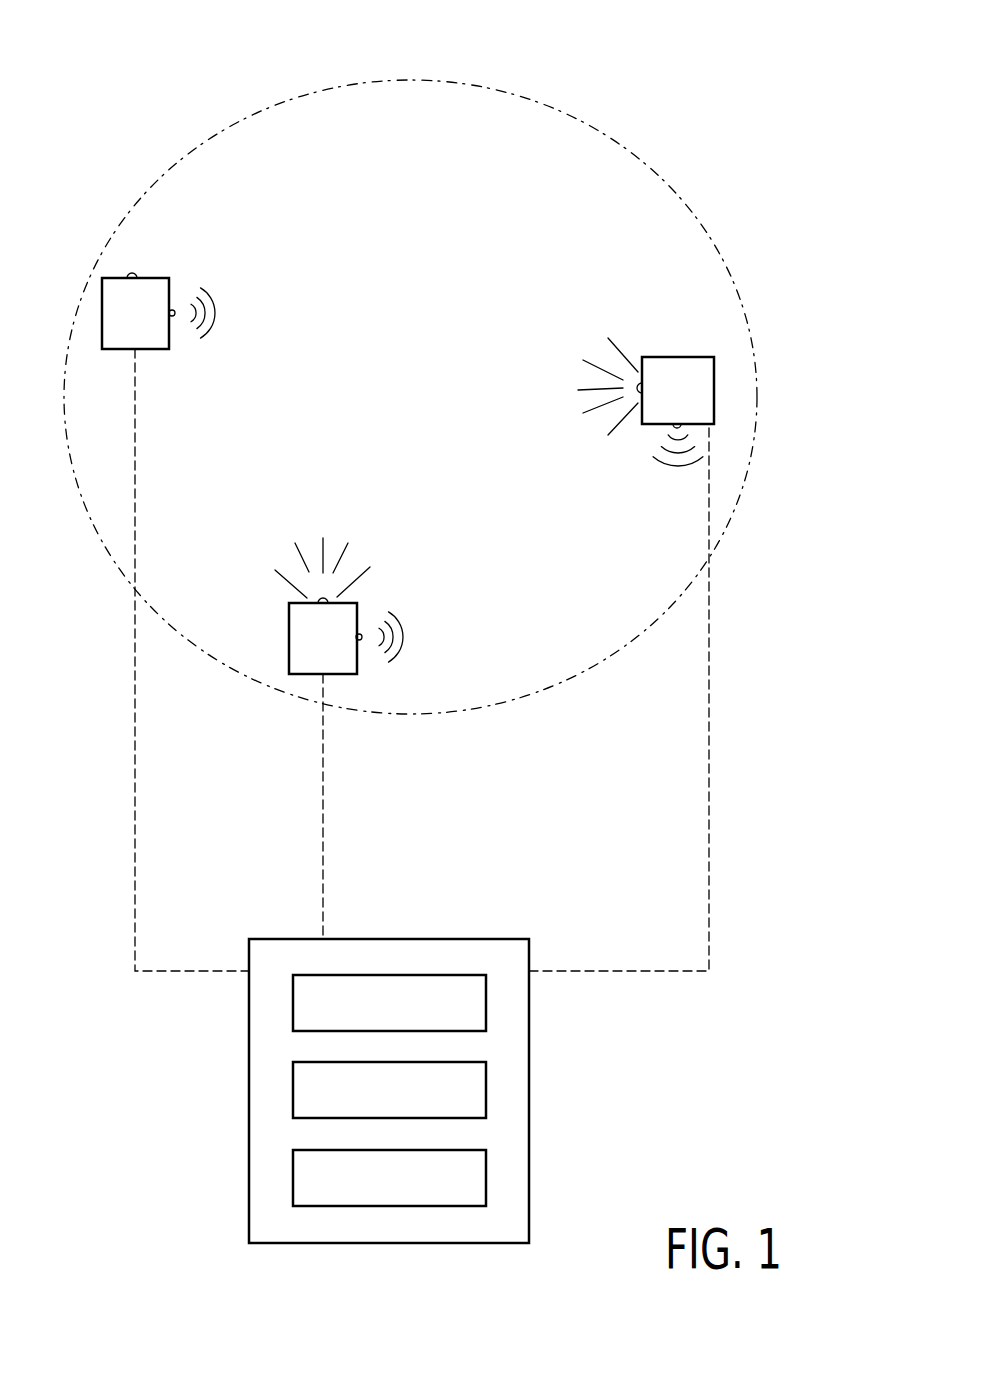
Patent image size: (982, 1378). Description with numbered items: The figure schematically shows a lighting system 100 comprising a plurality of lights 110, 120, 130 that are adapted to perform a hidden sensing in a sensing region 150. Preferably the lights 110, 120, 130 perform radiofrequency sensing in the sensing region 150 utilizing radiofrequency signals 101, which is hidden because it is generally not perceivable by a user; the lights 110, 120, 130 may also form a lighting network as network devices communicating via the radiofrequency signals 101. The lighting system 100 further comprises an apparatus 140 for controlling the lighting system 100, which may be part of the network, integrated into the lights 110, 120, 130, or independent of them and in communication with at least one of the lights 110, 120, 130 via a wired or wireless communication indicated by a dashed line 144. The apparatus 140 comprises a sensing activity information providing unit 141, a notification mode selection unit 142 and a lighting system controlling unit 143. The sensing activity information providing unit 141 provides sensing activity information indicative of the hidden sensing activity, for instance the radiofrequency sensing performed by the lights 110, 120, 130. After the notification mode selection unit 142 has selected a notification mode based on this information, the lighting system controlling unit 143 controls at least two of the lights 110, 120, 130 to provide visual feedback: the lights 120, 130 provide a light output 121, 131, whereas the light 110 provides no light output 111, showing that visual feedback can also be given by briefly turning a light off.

The lighting system 100 is at (668, 91).
The radiofrequency signals 101 is at (213, 297).
The light 110 is at (152, 310).
The light output 111 is at (134, 273).
The light 120 is at (329, 606).
The light output 121 is at (360, 574).
The light 130 is at (646, 351).
The light output 131 is at (620, 350).
The apparatus 140 is at (399, 1091).
The sensing activity information providing unit 141 is at (293, 1005).
The notification mode selection unit 142 is at (293, 1093).
The lighting system controlling unit 143 is at (293, 1183).
The dashed line 144 is at (712, 731).
The sensing region 150 is at (713, 240).